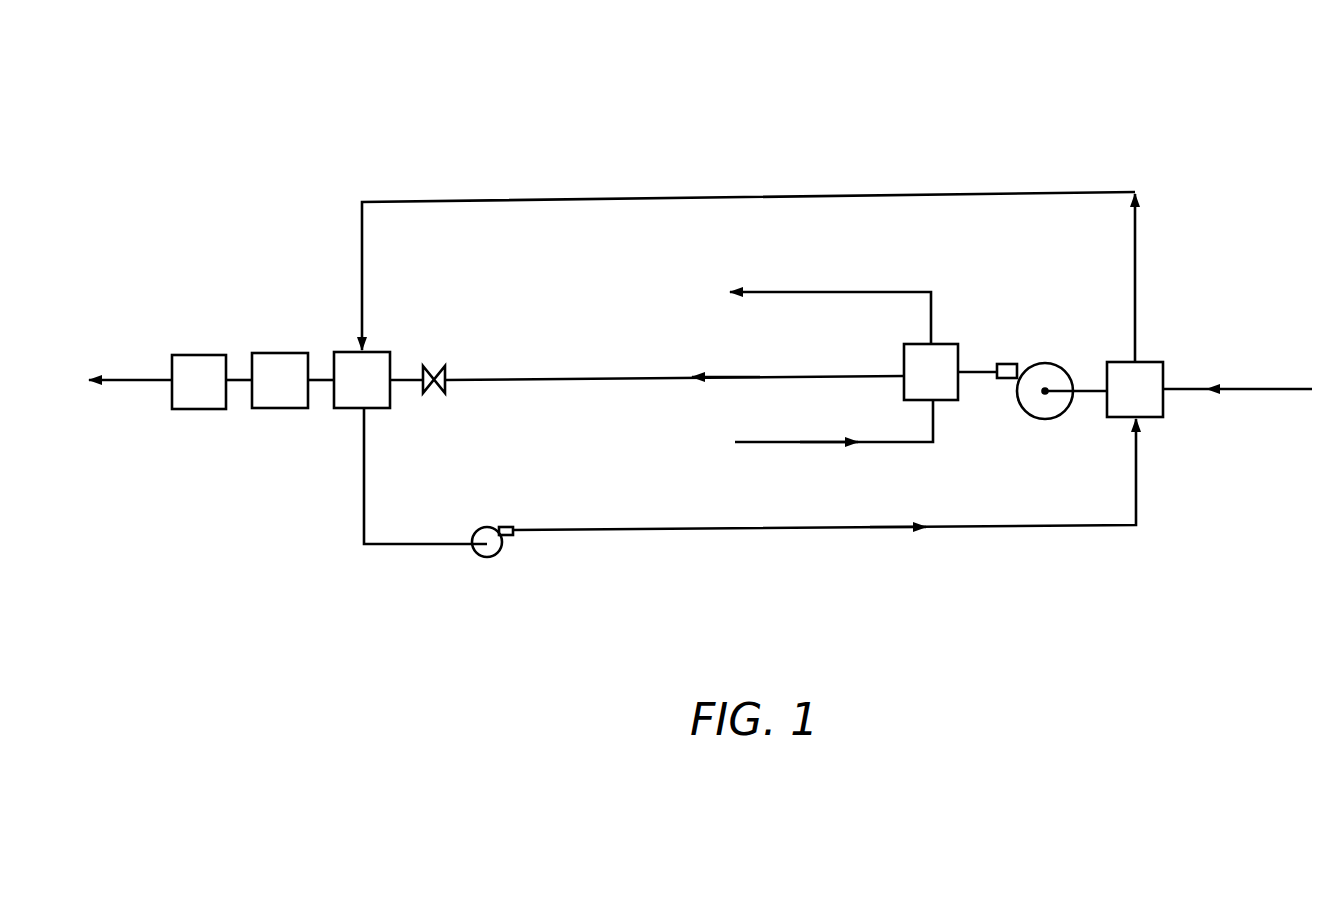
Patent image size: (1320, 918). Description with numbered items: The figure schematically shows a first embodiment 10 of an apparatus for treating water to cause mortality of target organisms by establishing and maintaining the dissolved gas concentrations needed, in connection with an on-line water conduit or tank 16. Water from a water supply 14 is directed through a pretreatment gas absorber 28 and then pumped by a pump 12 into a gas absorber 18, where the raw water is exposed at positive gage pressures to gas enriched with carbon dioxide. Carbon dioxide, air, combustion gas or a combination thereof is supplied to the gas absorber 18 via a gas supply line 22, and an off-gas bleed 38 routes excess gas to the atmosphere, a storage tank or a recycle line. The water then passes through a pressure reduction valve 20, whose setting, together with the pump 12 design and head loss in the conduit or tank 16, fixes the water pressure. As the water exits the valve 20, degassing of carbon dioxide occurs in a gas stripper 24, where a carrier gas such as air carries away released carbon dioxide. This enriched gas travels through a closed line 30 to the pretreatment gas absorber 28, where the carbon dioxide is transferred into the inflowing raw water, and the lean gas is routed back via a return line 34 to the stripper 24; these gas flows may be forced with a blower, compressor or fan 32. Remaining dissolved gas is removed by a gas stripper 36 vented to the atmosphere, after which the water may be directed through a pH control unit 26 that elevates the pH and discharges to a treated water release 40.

The first embodiment 10 is at (843, 98).
The pump 12 is at (1027, 363).
The water supply 14 is at (1268, 391).
The on-line water conduit or tank 16 is at (498, 378).
The gas absorber 18 is at (931, 372).
The pressure reduction valve 20 is at (428, 393).
The gas supply line 22 is at (798, 440).
The gas stripper 24 is at (349, 380).
The pH control unit 26 is at (199, 382).
The pretreatment gas absorber 28 is at (1135, 389).
The line 30 is at (1018, 526).
The blower, compressor or fan 32 is at (487, 556).
The return line 34 is at (825, 193).
The gas stripper 36 is at (267, 380).
The off-gas bleed 38 is at (832, 290).
The treated water release 40 is at (118, 380).